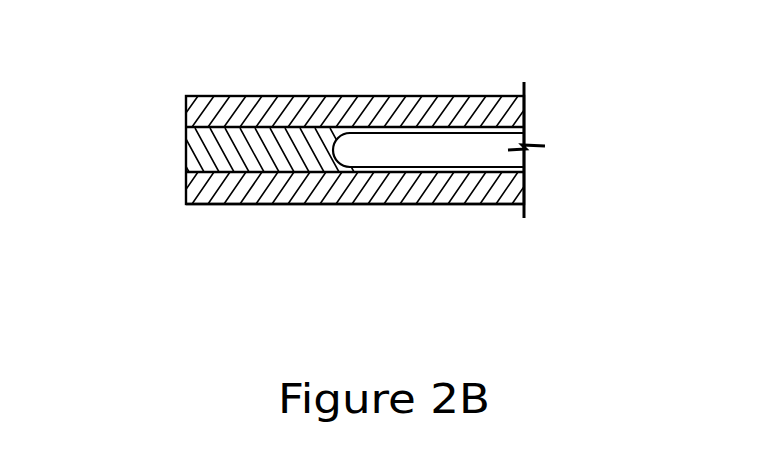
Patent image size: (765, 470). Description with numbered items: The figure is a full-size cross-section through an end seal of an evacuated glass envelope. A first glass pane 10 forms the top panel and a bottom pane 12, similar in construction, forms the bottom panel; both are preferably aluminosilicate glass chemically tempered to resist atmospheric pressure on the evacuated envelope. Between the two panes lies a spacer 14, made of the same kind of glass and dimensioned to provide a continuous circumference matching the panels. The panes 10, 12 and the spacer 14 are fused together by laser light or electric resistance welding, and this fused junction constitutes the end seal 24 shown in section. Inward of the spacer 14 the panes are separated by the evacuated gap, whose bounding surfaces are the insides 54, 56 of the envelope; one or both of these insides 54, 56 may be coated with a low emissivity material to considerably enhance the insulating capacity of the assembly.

The first glass pane 10 is at (355, 124).
The bottom glass pane 12 is at (355, 238).
The spacer 14 is at (186, 150).
The end seal 24 is at (295, 159).
The inside of glass envelope 54 is at (499, 118).
The inside of glass envelope 56 is at (499, 178).